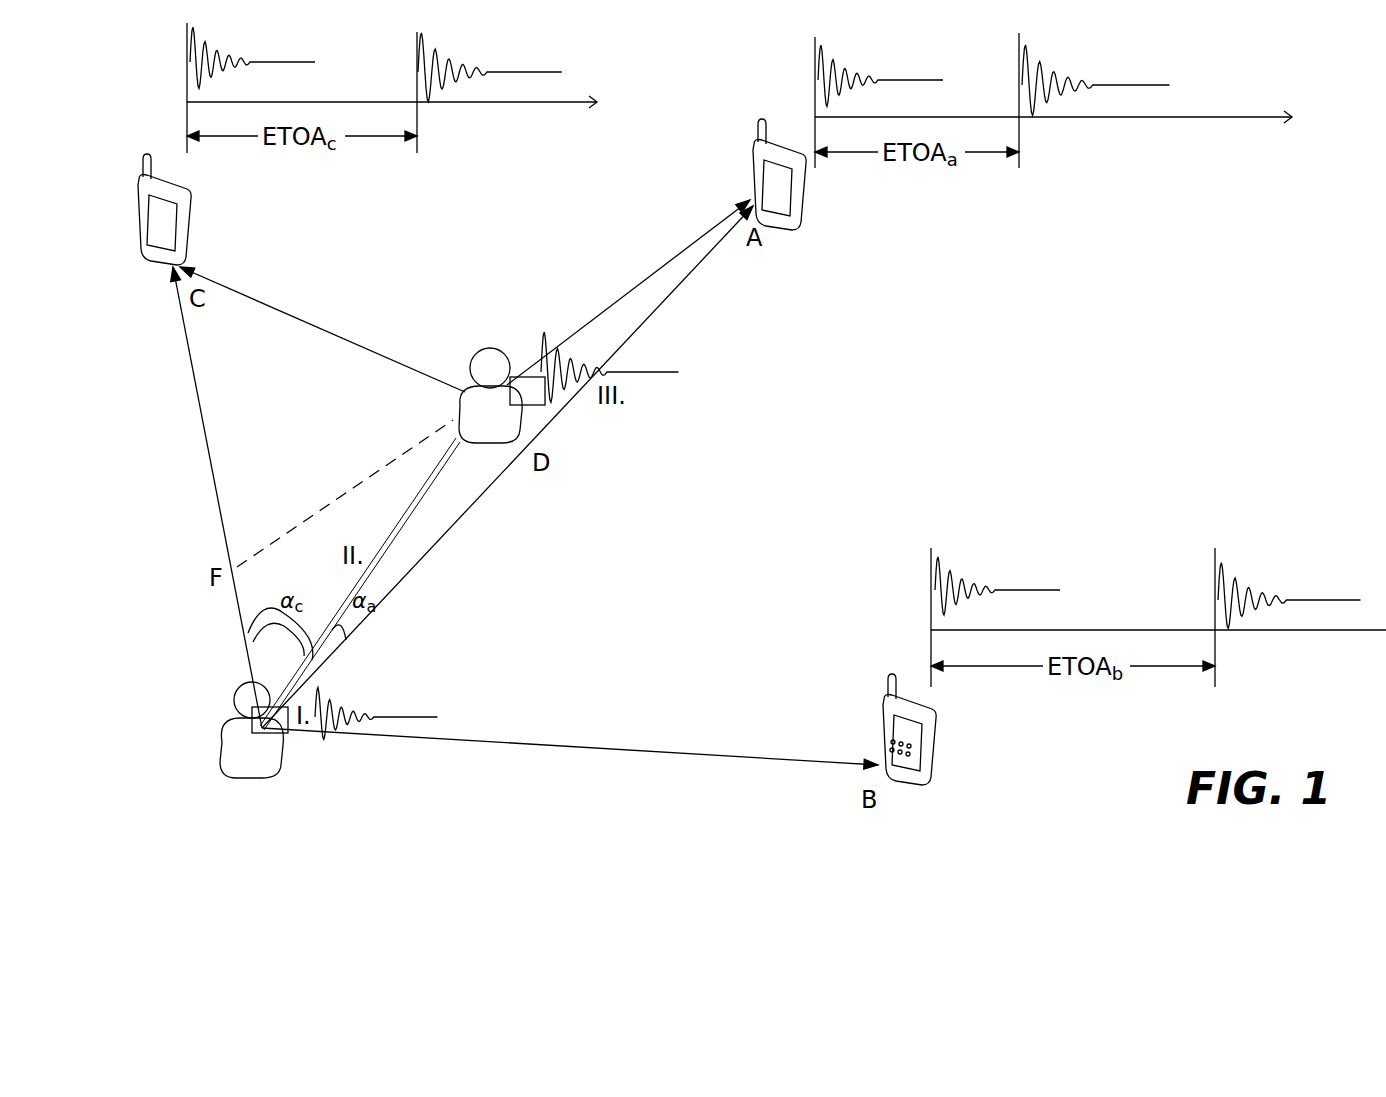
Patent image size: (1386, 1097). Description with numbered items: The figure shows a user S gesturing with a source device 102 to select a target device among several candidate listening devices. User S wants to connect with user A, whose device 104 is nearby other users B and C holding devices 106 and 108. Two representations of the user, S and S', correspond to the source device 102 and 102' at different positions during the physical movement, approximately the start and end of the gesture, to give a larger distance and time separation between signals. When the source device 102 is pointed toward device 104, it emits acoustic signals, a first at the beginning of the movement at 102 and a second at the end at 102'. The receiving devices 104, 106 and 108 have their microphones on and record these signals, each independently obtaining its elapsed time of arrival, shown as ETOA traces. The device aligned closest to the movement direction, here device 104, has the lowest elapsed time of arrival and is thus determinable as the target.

The source device 102 is at (329, 730).
The source device at end of gesture 102' is at (569, 403).
The target device 104 is at (805, 197).
The receiving device of user B 106 is at (918, 767).
The receiving device of user C 108 is at (185, 243).